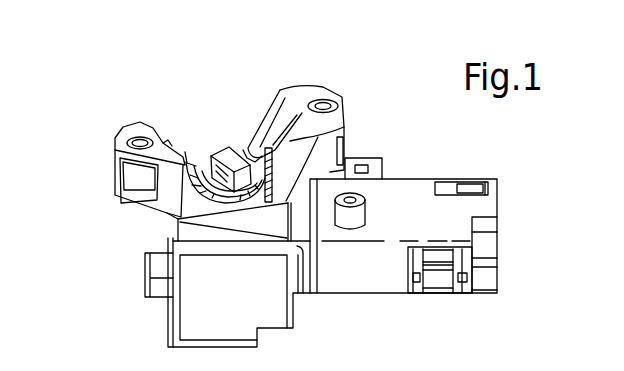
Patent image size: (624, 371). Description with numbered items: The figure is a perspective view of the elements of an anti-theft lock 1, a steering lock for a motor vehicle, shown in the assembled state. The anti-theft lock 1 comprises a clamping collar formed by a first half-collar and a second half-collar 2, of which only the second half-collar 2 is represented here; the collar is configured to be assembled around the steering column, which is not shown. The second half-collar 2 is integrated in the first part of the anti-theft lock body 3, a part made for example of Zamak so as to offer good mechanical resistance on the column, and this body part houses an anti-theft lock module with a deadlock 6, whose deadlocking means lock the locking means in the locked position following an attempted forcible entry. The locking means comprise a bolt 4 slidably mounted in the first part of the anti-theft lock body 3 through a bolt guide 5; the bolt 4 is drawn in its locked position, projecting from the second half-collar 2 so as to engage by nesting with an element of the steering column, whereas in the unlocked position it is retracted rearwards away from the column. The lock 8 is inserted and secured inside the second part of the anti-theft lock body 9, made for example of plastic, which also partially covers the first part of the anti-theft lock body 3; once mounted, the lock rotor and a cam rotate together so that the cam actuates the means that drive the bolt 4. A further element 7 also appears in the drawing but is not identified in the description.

The anti-theft lock 1 is at (93, 125).
The second half-collar 2 is at (300, 89).
The first part of the anti-theft lock body 3 is at (114, 196).
The bolt 4 is at (228, 146).
The bolt guide 5 is at (247, 147).
The deadlock 6 is at (201, 148).
The housing block 7 is at (227, 275).
The lock 8 is at (493, 253).
The second part of the anti-theft lock body 9 is at (398, 180).